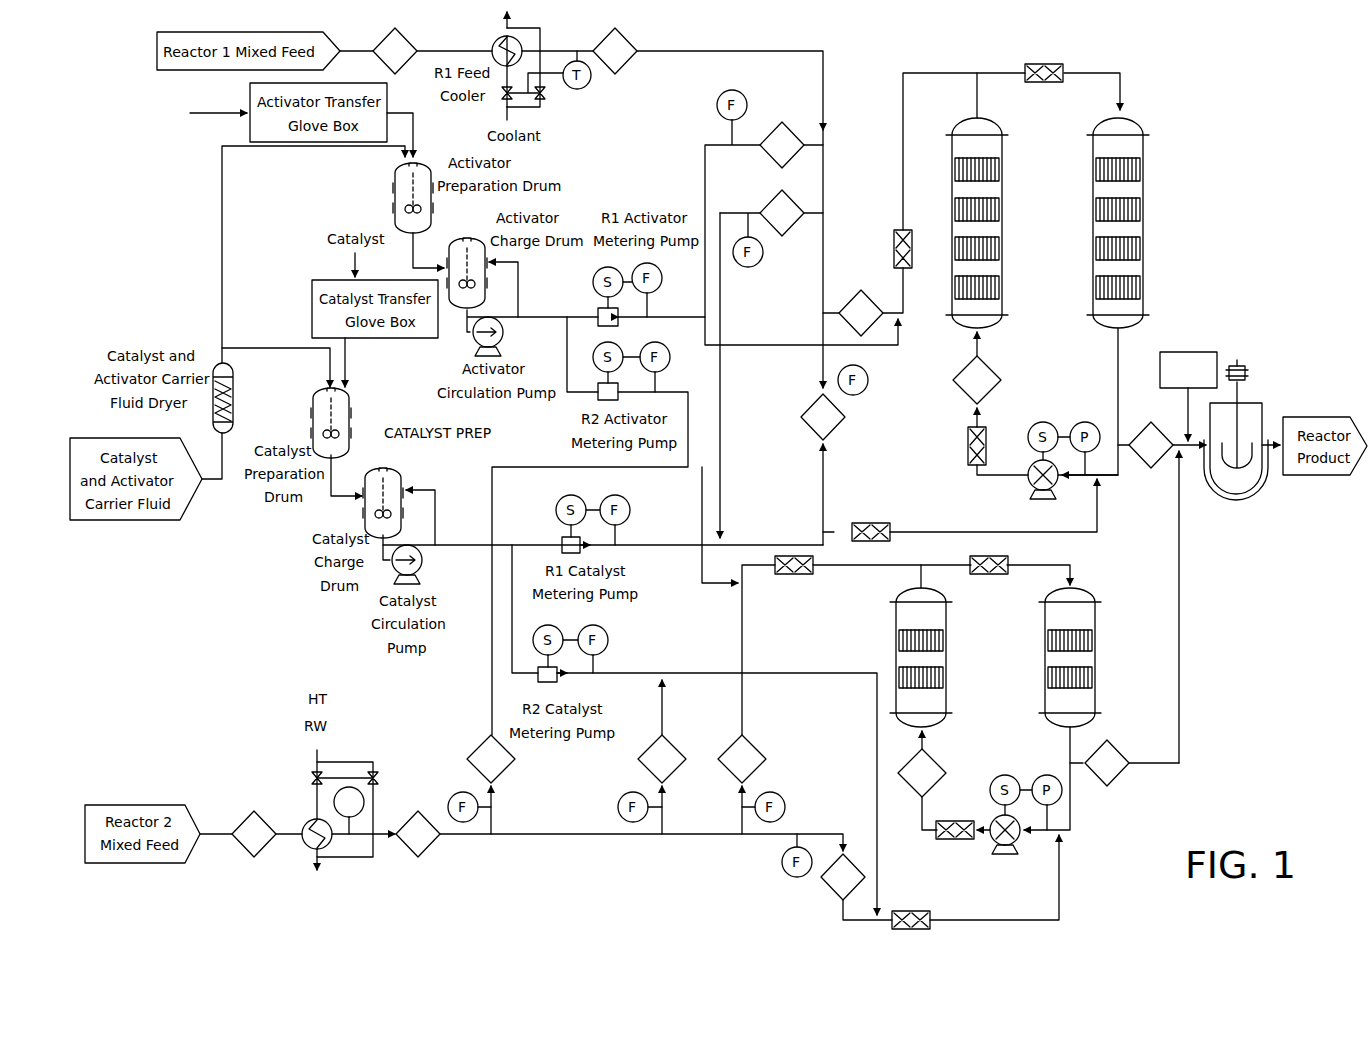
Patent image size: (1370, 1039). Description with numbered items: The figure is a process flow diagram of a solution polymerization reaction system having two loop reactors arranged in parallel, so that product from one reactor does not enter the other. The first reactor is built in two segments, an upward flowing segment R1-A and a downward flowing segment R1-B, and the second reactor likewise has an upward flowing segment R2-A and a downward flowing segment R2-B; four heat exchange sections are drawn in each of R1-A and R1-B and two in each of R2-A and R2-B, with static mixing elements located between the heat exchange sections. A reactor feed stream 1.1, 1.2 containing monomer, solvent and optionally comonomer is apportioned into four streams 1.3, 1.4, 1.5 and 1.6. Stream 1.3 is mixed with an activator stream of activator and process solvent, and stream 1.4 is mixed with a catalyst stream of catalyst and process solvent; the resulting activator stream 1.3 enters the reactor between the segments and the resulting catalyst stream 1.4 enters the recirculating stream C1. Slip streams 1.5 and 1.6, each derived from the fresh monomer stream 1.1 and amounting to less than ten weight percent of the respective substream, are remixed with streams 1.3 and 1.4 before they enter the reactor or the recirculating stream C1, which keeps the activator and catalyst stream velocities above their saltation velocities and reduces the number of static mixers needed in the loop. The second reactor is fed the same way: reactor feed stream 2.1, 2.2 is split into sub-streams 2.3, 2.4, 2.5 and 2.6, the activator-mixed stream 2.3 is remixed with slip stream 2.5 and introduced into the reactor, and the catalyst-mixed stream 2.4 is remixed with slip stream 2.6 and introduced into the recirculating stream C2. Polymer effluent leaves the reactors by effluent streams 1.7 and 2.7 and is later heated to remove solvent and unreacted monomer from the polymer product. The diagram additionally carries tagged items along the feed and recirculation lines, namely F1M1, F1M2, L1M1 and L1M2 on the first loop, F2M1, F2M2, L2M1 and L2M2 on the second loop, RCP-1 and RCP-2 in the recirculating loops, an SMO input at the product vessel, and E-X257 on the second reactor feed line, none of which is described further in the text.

The fresh monomer reactor feed stream 1.1 is at (395, 51).
The reactor feed stream 1.2 is at (615, 51).
The activator stream 1.3 is at (782, 145).
The catalyst stream 1.4 is at (782, 213).
The slip stream 1.5 is at (861, 313).
The slip stream 1.6 is at (823, 417).
The polymer effluent stream 1.7 is at (1151, 445).
The reactor feed stream 2.1 is at (254, 834).
The reactor feed stream 2.2 is at (418, 834).
The activator stream 2.3 is at (491, 759).
The catalyst stream 2.4 is at (662, 759).
The slip stream 2.5 is at (742, 759).
The slip stream 2.6 is at (843, 877).
The polymer effluent stream 2.7 is at (1107, 763).
The upward flowing segment R1-A is at (977, 223).
The downward flowing segment R1-B is at (1118, 223).
The upward flowing segment R2-A is at (921, 657).
The downward flowing segment R2-B is at (1070, 657).
The flow meter F1M2 is at (881, 249).
The flow meter F1M1 is at (871, 524).
The level/flow meter L1M2 is at (1044, 86).
The flow meter L1M1 is at (956, 446).
The flow meter F2M2 is at (794, 579).
The flow meter F2M1 is at (911, 908).
The flow meter L2M2 is at (989, 579).
The flow meter L2M1 is at (955, 841).
The recirculating stream C1 is at (977, 380).
The recirculating stream C2 is at (922, 773).
The reactor 1 recirculation pump RCP-1 is at (1041, 489).
The reactor 2 recirculation pump RCP-2 is at (1004, 845).
The SMO feed SMO is at (1188, 396).
The reactor 2 feed heat exchanger E-X257 is at (314, 817).